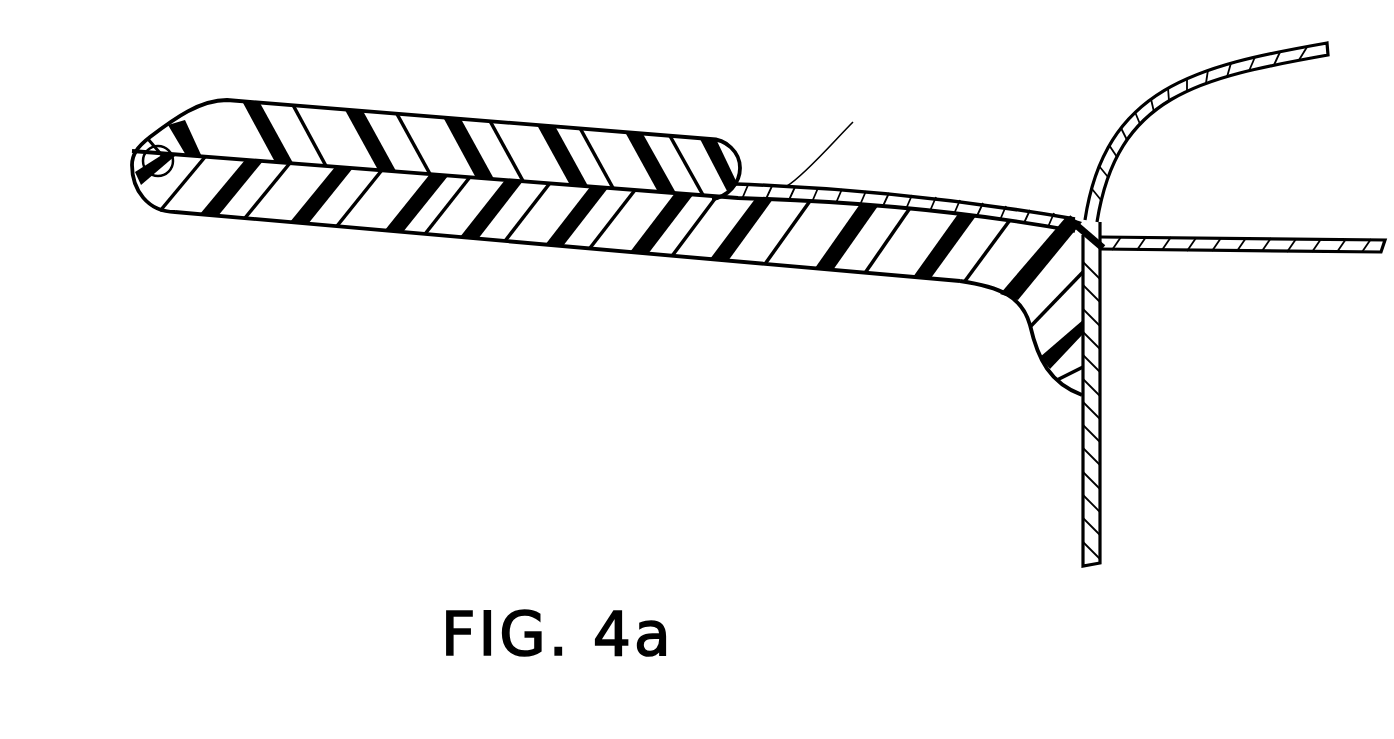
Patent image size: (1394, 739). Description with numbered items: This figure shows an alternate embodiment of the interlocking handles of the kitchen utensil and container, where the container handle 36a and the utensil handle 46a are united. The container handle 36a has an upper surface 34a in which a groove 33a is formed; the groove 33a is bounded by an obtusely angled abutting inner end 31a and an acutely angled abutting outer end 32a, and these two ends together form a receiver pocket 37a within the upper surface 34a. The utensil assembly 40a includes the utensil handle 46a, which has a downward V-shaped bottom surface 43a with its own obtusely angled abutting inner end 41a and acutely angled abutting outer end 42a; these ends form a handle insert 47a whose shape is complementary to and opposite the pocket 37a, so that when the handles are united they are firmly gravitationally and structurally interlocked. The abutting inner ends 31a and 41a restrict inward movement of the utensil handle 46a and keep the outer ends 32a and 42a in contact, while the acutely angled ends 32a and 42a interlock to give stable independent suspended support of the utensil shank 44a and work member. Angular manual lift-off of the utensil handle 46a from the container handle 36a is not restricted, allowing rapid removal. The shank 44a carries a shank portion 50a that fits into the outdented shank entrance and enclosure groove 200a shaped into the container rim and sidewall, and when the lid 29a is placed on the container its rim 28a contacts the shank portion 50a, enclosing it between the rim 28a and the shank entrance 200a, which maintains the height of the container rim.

The lid rim 28a is at (1107, 217).
The lid 29a is at (1272, 70).
The obtusely angled abutting inner end 31a is at (857, 138).
The acutely angled abutting outer end 32a is at (217, 160).
The groove 33a is at (430, 205).
The upper surface 34a is at (830, 205).
The handle 36a is at (523, 228).
The receiver pocket 37a is at (270, 163).
The utensil assembly 40a is at (921, 188).
The obtusely angled abutting inner end 41a is at (712, 143).
The acutely angled abutting outer end 42a is at (142, 153).
The downward V-shaped bottom surface 43a is at (363, 165).
The shank 44a is at (1013, 207).
The utensil handle 46a is at (478, 116).
The handle insert 47a is at (548, 177).
The shank portion 50a is at (1101, 243).
The outdented shank entrance and enclosure groove 200a is at (1035, 328).